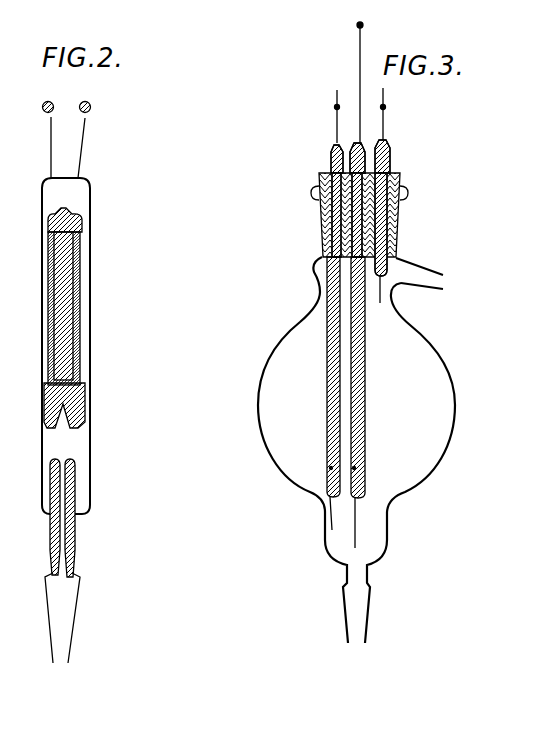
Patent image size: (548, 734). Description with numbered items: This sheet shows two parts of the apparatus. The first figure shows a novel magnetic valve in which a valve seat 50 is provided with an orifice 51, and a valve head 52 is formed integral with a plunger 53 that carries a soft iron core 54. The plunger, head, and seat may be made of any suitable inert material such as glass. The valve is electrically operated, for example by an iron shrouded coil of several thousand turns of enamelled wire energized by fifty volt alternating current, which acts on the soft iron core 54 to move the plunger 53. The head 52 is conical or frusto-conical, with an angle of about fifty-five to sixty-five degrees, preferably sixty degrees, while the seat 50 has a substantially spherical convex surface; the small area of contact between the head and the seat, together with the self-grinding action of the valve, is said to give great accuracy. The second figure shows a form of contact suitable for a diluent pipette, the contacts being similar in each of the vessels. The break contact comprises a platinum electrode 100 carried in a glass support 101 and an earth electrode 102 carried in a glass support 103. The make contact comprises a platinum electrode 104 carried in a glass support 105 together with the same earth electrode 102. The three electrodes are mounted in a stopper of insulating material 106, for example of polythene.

In FIG. 2, the valve seat 50 is at (70, 484).
In FIG. 2, the orifice 51 is at (64, 460).
In FIG. 2, the valve head 52 is at (78, 402).
In FIG. 2, the plunger 53 is at (88, 273).
In FIG. 2, the soft iron core 54 is at (73, 263).
In FIG. 3, the platinum electrode 100 is at (328, 508).
In FIG. 3, the glass support 101 is at (328, 402).
In FIG. 3, the earth electrode 102 is at (355, 515).
In FIG. 3, the glass support 103 is at (365, 426).
In FIG. 3, the platinum electrode 104 is at (380, 303).
In FIG. 3, the glass support 105 is at (390, 262).
In FIG. 3, the stopper of insulating material 106 is at (398, 178).